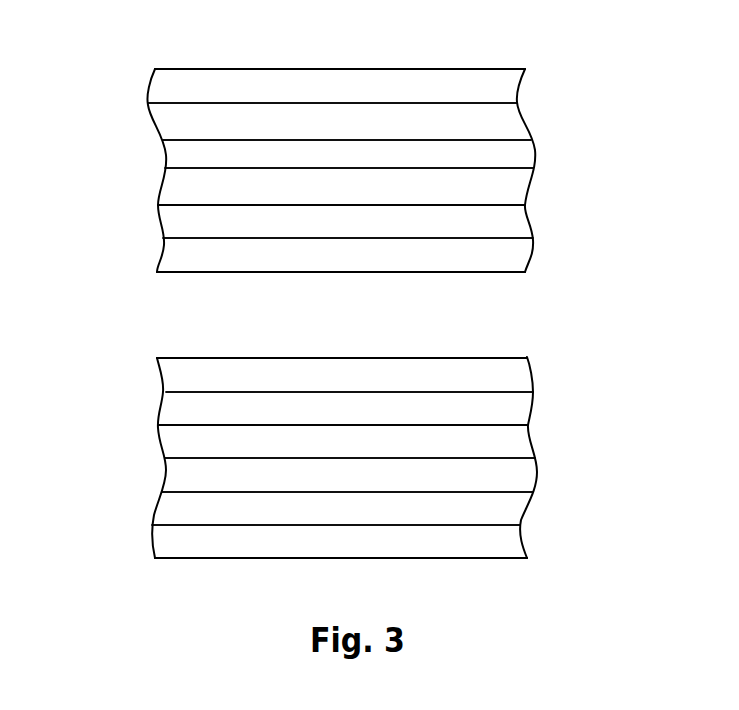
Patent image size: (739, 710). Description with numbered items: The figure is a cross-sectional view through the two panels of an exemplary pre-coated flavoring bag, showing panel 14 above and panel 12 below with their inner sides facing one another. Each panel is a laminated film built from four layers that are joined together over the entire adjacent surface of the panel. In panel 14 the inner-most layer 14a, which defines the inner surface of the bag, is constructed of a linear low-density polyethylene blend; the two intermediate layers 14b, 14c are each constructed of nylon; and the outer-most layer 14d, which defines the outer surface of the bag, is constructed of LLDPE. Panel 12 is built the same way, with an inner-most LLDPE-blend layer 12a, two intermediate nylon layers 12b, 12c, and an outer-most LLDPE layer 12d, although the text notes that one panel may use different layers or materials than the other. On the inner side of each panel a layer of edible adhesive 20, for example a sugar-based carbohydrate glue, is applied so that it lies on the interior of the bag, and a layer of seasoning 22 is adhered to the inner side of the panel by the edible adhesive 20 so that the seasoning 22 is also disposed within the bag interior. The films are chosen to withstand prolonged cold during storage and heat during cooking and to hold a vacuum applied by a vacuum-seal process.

The panel 12 is at (555, 422).
The inner-most layer 12a is at (158, 445).
The intermediate layer 12b is at (163, 475).
The intermediate layer 12c is at (153, 508).
The outer-most layer 12d is at (150, 547).
The panel 14 is at (553, 68).
The inner-most layer 14a is at (158, 188).
The intermediate layer 14b is at (163, 157).
The intermediate layer 14c is at (155, 122).
The outer-most layer 14d is at (147, 87).
The edible adhesive 20 is at (532, 223).
The seasoning 22 is at (532, 257).